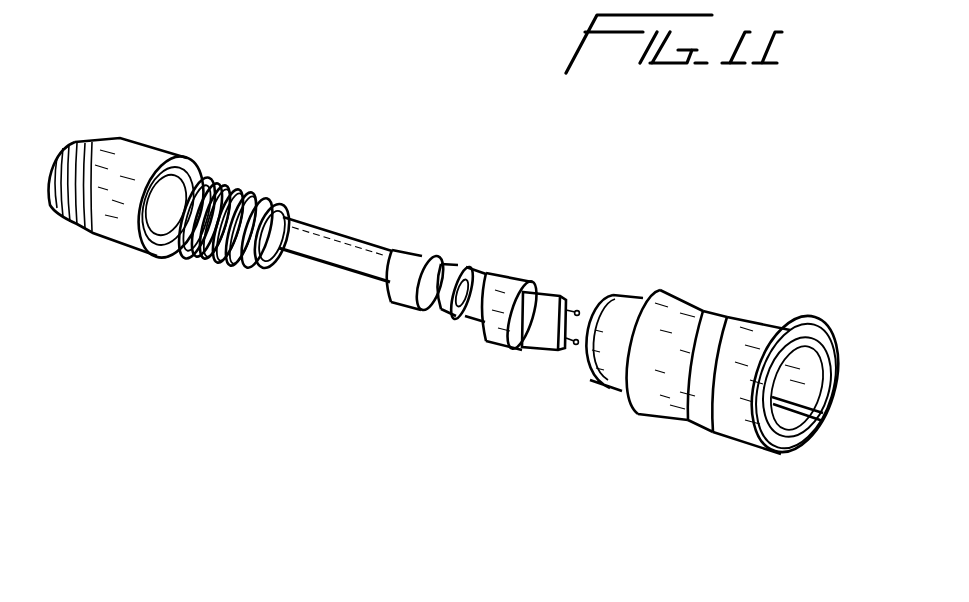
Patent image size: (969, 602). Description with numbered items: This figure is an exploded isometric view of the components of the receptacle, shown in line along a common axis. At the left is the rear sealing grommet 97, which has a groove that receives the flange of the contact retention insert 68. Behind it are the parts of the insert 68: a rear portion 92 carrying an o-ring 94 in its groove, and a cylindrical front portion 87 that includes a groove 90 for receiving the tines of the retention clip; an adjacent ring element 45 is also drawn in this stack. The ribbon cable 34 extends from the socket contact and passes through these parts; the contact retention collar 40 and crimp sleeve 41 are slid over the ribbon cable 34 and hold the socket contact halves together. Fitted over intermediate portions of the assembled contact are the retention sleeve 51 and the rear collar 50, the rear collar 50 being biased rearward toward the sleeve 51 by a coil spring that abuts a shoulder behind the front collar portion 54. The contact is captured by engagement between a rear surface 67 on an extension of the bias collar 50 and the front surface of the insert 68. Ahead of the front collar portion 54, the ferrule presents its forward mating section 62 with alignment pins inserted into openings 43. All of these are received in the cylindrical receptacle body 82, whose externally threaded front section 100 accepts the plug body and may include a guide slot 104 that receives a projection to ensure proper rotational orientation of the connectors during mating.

The rear sealing grommet 97 is at (131, 158).
The gasket ring 45 is at (222, 178).
The o-ring 94 is at (200, 258).
The rear portion 92 is at (230, 178).
The cylindrical front portion 87 is at (217, 258).
The contact retention insert 68 is at (265, 190).
The groove 90 is at (257, 261).
The ribbon cable 34 is at (356, 252).
The crimp sleeve 41 is at (405, 293).
The retention sleeve 51 is at (441, 272).
The rear collar 50 is at (443, 313).
The contact retention collar 40 is at (481, 287).
The rear surface 67 is at (466, 318).
The front collar portion 54 is at (497, 326).
The forward mating section 62 is at (548, 293).
The openings 43 is at (631, 297).
The receptacle body 82 is at (667, 392).
The externally threaded front section 100 is at (737, 424).
The guide slot 104 is at (800, 400).